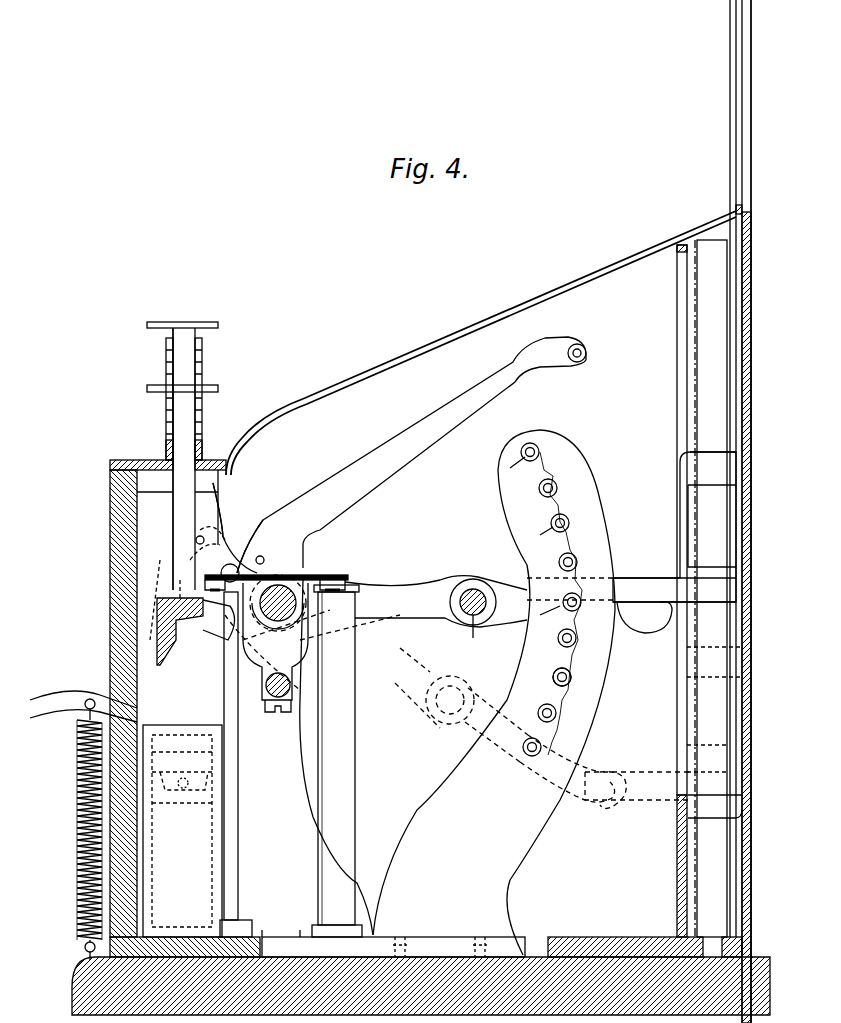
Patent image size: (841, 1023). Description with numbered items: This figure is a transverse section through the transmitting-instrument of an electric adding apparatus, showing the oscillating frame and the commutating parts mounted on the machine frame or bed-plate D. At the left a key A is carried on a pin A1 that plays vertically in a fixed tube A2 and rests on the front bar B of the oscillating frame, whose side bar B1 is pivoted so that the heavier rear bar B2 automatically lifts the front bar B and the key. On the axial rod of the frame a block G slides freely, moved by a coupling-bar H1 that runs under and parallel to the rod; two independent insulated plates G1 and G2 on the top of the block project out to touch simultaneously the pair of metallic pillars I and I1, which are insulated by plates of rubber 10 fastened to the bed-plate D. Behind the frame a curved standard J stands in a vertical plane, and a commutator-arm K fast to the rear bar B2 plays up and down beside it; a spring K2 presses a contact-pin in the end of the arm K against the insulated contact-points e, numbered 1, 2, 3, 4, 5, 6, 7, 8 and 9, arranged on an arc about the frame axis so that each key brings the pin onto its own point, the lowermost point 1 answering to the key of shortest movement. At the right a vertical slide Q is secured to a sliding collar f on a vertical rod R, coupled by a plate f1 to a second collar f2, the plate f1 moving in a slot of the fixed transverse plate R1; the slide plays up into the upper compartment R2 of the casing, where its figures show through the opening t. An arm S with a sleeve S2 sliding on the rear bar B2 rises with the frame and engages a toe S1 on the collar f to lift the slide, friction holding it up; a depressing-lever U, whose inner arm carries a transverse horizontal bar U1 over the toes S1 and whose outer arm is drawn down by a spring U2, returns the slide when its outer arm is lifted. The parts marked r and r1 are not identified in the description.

The key A is at (177, 445).
The pin A1 is at (180, 415).
The fixed tube A2 is at (202, 355).
The front bar B is at (187, 583).
The side bar B1 is at (180, 631).
The rear bar B2 is at (473, 590).
The frame D is at (421, 976).
The block G is at (275, 641).
The plate G1 is at (320, 573).
The plate G2 is at (252, 565).
The coupling-bar H1 is at (276, 714).
The metallic pillar I is at (337, 761).
The metallic pillar I1 is at (236, 764).
The commutator-arm K is at (513, 590).
The spring K2 is at (278, 603).
The curved standard J is at (574, 677).
The slide Q is at (740, 510).
The vertical rod R is at (714, 588).
The fixed transverse plate R1 is at (672, 591).
The upper compartment R2 is at (734, 104).
The arm S is at (508, 605).
The toe S1 is at (631, 590).
The sleeve S2 is at (480, 635).
The depressing-lever U is at (308, 636).
The transverse horizontal bar U1 is at (586, 354).
The spring U2 is at (77, 829).
The contact-point e is at (531, 540).
The sliding collar f is at (674, 527).
The plate f1 is at (684, 514).
The second collar f2 is at (742, 460).
The pivot r is at (184, 789).
The box r1 is at (182, 831).
The opening t is at (736, 511).
The first contact-point 1 is at (542, 749).
The second contact-point 2 is at (556, 715).
The third contact-point 3 is at (568, 678).
The fourth contact-point 4 is at (578, 639).
The fifth contact-point 5 is at (581, 602).
The sixth contact-point 6 is at (575, 558).
The seventh contact-point 7 is at (568, 520).
The eighth contact-point 8 is at (554, 484).
The ninth contact-point 9 is at (535, 446).
The rubber plate 10 is at (280, 924).